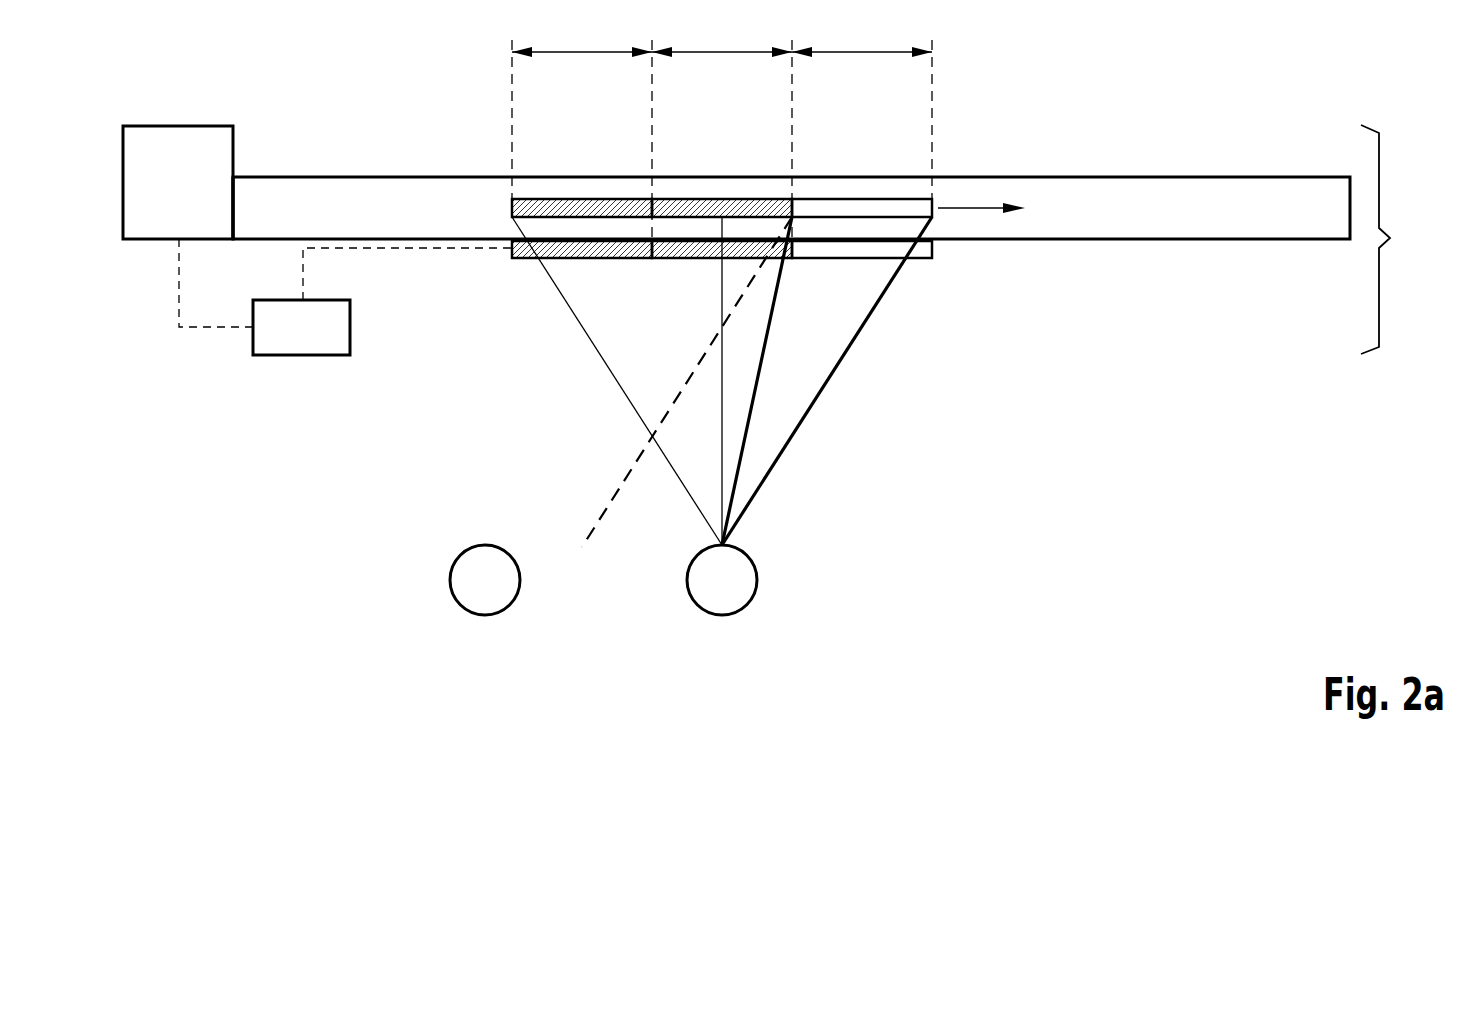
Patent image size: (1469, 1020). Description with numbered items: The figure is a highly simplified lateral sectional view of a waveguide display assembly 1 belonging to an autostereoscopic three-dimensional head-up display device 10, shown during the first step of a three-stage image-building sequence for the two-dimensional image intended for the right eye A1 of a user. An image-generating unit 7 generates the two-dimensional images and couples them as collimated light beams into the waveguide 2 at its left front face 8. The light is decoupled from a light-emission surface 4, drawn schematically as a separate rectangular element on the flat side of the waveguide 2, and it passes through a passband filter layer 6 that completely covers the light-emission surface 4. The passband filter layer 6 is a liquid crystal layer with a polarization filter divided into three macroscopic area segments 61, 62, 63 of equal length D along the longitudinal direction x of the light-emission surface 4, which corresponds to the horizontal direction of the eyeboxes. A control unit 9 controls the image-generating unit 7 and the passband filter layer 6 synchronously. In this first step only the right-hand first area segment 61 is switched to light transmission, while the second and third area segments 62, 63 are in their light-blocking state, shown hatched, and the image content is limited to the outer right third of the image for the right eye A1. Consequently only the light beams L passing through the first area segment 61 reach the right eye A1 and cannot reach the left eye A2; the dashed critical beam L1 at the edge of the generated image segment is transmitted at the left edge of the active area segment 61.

The waveguide display assembly 1 is at (1388, 239).
The waveguide 2 is at (301, 197).
The light-emission surface 4 is at (840, 205).
The passband filter layer 6 is at (820, 259).
The image-generating unit 7 is at (178, 182).
The left front face 8 is at (214, 197).
The control unit 9 is at (345, 297).
The head-up display device 10 is at (1172, 442).
The first area segment 61 is at (862, 199).
The second area segment 62 is at (652, 128).
The third area segment 63 is at (512, 128).
The length D is at (722, 37).
The light L is at (798, 385).
The critical beam L1 is at (622, 485).
The right eye A1 is at (722, 580).
The left eye A2 is at (485, 580).
The longitudinal direction x is at (981, 196).